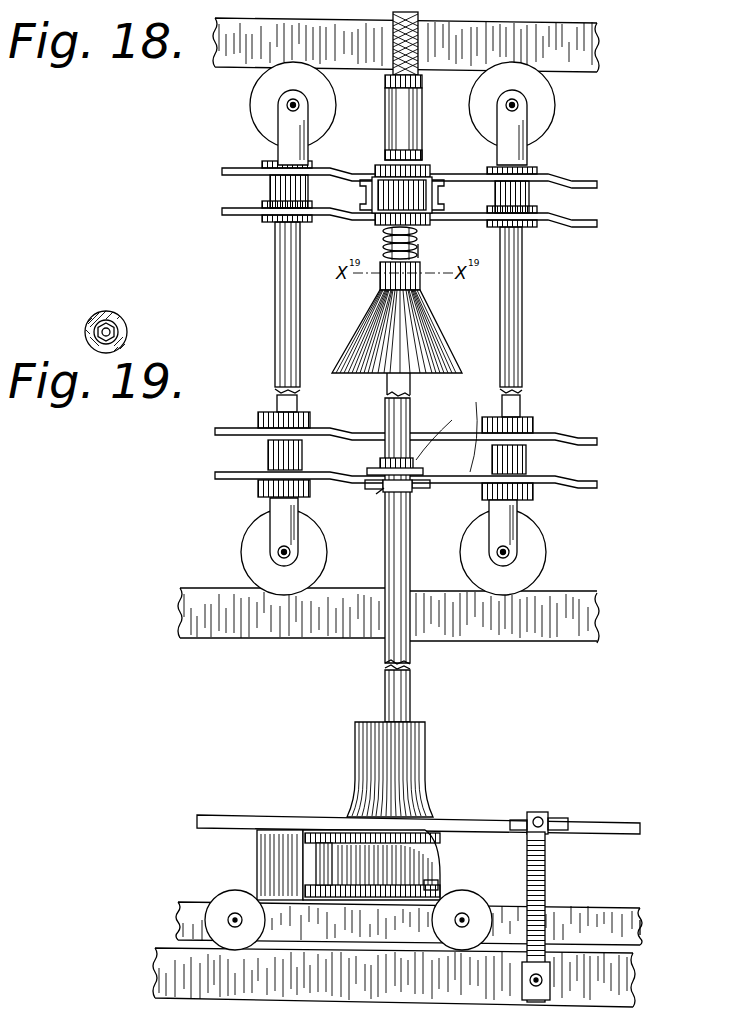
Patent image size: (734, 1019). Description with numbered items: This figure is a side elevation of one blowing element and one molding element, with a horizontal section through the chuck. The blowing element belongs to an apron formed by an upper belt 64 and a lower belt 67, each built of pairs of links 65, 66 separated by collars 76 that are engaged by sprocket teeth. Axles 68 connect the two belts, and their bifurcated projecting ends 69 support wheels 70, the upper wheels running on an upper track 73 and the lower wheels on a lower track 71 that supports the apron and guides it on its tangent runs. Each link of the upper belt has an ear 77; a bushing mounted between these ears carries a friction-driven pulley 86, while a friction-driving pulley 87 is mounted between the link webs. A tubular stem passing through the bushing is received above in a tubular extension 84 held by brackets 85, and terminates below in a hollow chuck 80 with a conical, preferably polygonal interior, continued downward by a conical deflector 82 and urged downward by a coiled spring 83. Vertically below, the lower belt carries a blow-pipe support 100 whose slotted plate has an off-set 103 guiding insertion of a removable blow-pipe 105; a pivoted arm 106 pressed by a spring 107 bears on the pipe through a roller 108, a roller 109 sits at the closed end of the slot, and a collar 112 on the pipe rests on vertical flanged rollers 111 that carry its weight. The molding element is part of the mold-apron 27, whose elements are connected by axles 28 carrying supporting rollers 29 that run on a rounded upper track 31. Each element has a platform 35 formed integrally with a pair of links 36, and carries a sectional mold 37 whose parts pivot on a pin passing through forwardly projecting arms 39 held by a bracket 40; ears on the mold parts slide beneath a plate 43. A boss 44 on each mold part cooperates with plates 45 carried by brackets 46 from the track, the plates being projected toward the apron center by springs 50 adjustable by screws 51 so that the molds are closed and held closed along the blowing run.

In FIG. 18, the upper track 73 is at (406, 45).
In FIG. 18, the wheels 70 is at (252, 101).
In FIG. 18, the projecting ends of the axles 69 is at (280, 138).
In FIG. 18, the brackets 85 is at (392, 82).
In FIG. 18, the tubular extensions 84 is at (422, 110).
In FIG. 18, the ear 77 is at (378, 170).
In FIG. 18, the link 65 is at (455, 172).
In FIG. 18, the belt 64 is at (598, 183).
In FIG. 18, the collars 76 is at (270, 192).
In FIG. 18, the friction-driven pulley 86 is at (378, 193).
In FIG. 18, the friction-driving pulley 87 is at (434, 198).
In FIG. 18, the link 66 is at (418, 243).
In FIG. 18, the coiled springs 83 is at (420, 252).
In FIG. 18, the axles 68 is at (275, 305).
In FIG. 18, the hollow chuck 80 is at (382, 278).
In FIG. 19, the hollow chuck 80 is at (122, 324).
In FIG. 18, the conical deflectors 82 is at (440, 336).
In FIG. 18, the arm 106 is at (476, 427).
In FIG. 18, the spring 107 is at (437, 430).
In FIG. 18, the belt 67 is at (560, 433).
In FIG. 18, the collars 112 is at (380, 466).
In FIG. 18, the blow-pipe supports 100 is at (414, 464).
In FIG. 18, the roller 108 is at (428, 486).
In FIG. 18, the off-set 103 is at (368, 489).
In FIG. 18, the vertical flanged rollers 111 is at (404, 490).
In FIG. 18, the roller 109 is at (380, 495).
In FIG. 18, the removable blow-pipes 105 is at (410, 555).
In FIG. 19, the removable blow-pipes 105 is at (85, 332).
In FIG. 18, the track 71 is at (388, 615).
In FIG. 18, the sectional mold 37 is at (428, 800).
In FIG. 18, the boss 44 is at (383, 830).
In FIG. 18, the plates 45 is at (505, 816).
In FIG. 18, the screws 51 is at (546, 813).
In FIG. 18, the springs 50 is at (560, 818).
In FIG. 18, the bracket 40 is at (269, 830).
In FIG. 18, the forwardly projecting arms 39 is at (322, 833).
In FIG. 18, the platform 35 is at (445, 870).
In FIG. 18, the plate 43 is at (438, 885).
In FIG. 18, the axles 28 is at (235, 920).
In FIG. 18, the supporting rollers 29 is at (205, 920).
In FIG. 18, the brackets 46 is at (546, 872).
In FIG. 18, the links 36 is at (409, 923).
In FIG. 18, the mold-apron 27 is at (645, 926).
In FIG. 18, the upper track 31 is at (394, 977).